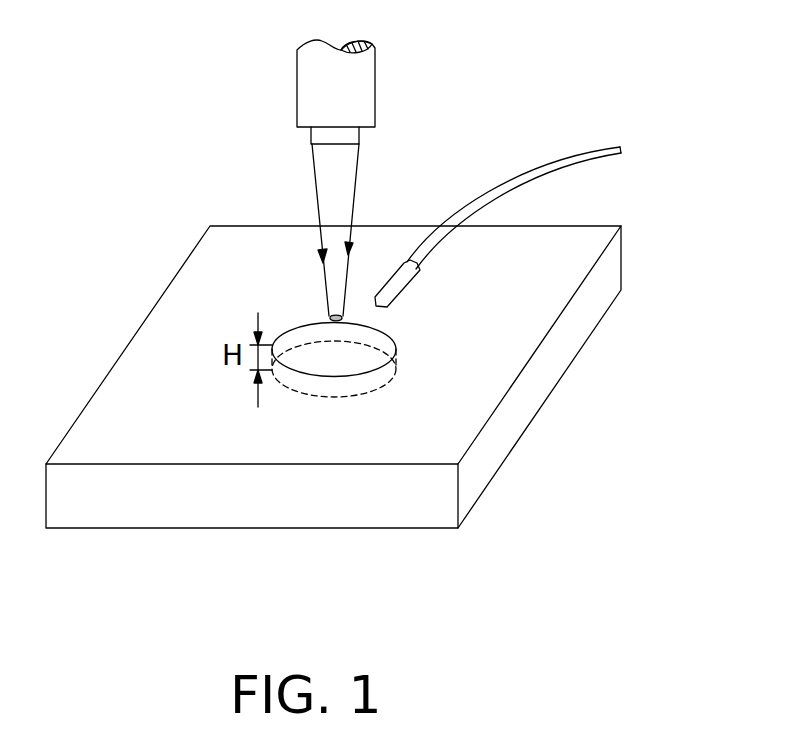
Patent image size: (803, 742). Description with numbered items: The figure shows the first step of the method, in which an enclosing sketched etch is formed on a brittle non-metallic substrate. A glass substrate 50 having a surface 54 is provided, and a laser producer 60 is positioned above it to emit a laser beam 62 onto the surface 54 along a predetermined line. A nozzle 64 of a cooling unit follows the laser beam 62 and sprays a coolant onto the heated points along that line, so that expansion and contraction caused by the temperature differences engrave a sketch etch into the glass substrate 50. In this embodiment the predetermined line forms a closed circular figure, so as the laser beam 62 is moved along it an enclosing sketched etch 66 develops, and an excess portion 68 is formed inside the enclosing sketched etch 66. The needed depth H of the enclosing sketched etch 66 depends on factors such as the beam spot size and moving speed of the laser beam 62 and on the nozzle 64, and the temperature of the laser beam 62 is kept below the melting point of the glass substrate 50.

The glass substrate 50 is at (172, 208).
The surface 54 is at (553, 265).
The laser producer 60 is at (363, 80).
The laser beam 62 is at (337, 167).
The nozzle 64 is at (400, 277).
The enclosing sketched etch 66 is at (397, 352).
The excess portion 68 is at (333, 348).